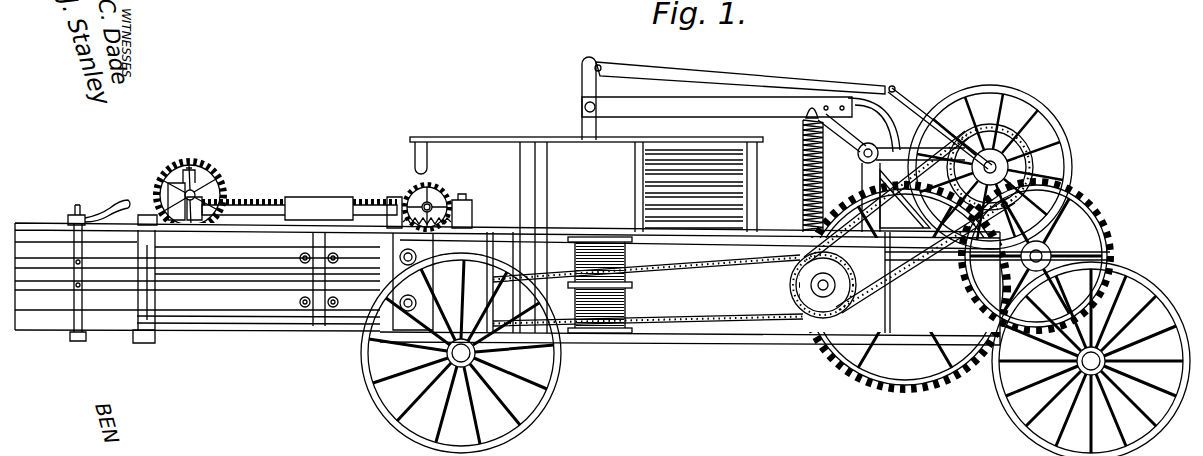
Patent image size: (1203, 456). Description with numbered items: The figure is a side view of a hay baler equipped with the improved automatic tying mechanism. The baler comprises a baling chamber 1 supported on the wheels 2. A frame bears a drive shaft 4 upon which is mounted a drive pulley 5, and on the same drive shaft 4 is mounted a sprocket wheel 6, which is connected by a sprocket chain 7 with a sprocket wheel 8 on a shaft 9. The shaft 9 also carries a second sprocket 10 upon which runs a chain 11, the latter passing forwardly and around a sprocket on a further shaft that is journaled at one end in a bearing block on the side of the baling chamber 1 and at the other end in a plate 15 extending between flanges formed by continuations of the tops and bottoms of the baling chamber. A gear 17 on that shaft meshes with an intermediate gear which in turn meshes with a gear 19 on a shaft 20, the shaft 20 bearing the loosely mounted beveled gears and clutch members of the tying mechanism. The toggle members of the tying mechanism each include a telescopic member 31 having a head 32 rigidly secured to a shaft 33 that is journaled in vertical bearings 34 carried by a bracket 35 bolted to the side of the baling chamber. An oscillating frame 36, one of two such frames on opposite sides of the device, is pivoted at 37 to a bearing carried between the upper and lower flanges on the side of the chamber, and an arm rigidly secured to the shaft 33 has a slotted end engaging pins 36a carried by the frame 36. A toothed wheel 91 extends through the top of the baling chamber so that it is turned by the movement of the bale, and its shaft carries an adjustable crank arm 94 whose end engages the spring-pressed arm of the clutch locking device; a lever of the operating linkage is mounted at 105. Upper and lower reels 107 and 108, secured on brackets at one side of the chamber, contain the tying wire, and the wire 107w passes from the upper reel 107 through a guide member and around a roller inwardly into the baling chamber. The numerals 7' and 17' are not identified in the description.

The baling chamber 1 is at (685, 326).
The wheels 2 is at (558, 370).
The drive shaft 4 is at (1040, 138).
The drive pulley 5 is at (1040, 114).
The sprocket wheel 6 is at (996, 166).
The sprocket chain 7 is at (905, 287).
The shaft 7' is at (518, 339).
The sprocket wheel 8 is at (790, 296).
The shaft 9 is at (816, 285).
The second sprocket 10 is at (909, 222).
The chain 11 is at (730, 266).
The plate 15 is at (464, 224).
The gear 17 is at (404, 337).
The shaft end 17' is at (504, 225).
The gear 19 is at (432, 186).
The shaft 20 is at (432, 203).
The telescopic member 31 is at (326, 306).
The head 32 is at (320, 225).
The shaft 33 is at (300, 244).
The vertical bearings 34 is at (317, 258).
The bracket 35 is at (332, 262).
The oscillating frame 36 is at (290, 308).
The pins 36a is at (388, 320).
The pivot 37 is at (147, 215).
The toothed wheel 91 is at (216, 182).
The adjustable crank arm 94 is at (796, 448).
The pivot mounting 105 is at (626, 300).
The upper reel 107 is at (598, 237).
The wire 107w is at (559, 260).
The lower reel 108 is at (554, 293).